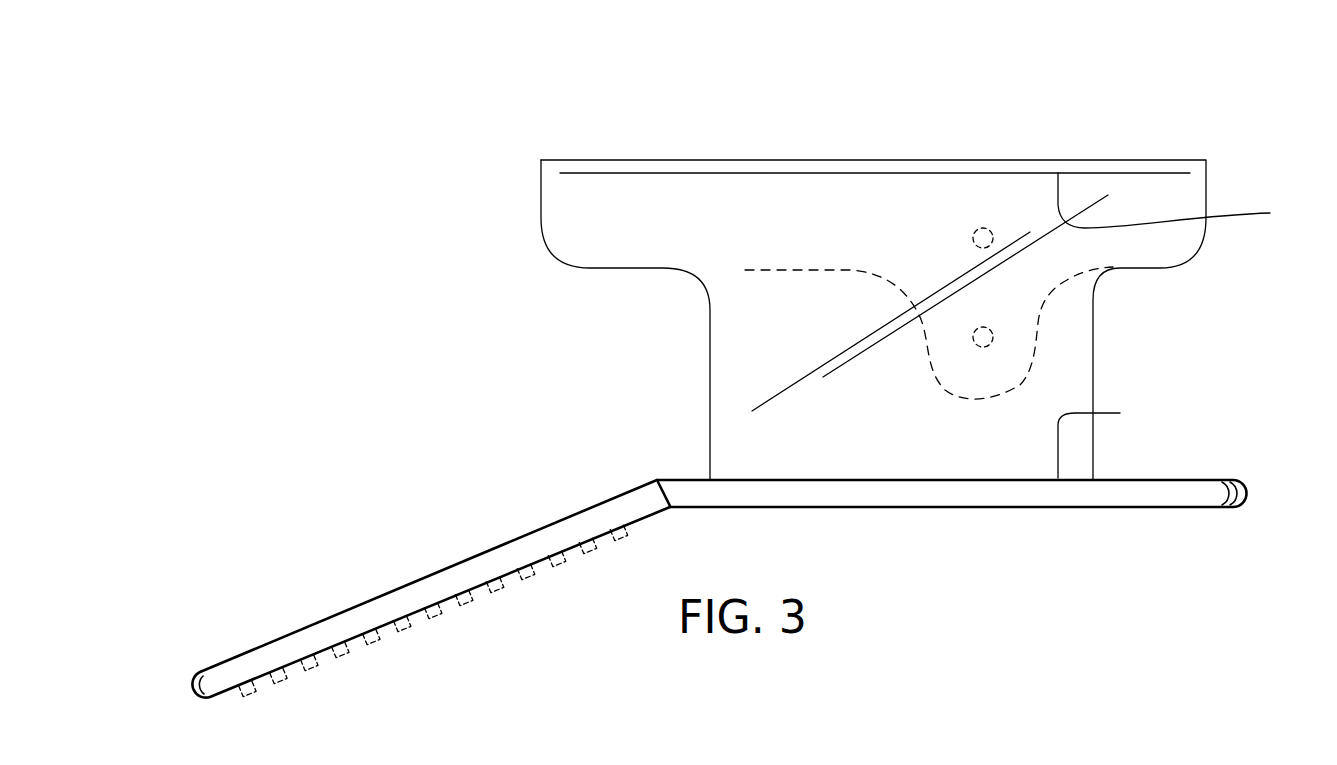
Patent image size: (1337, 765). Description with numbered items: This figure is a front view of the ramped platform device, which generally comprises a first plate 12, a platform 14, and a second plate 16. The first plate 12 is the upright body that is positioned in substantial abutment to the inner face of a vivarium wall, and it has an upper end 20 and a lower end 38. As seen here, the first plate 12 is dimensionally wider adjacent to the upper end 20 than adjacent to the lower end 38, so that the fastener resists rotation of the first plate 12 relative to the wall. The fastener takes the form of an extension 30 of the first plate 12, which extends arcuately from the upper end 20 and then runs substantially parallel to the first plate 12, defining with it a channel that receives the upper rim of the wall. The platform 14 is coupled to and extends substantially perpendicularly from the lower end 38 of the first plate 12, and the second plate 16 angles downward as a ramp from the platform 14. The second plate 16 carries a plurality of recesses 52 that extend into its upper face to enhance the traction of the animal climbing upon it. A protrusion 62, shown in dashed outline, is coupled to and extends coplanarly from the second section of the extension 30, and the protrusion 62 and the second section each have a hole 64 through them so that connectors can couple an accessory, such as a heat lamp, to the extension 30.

The first plate 12 is at (1070, 352).
The platform 14 is at (1185, 492).
The second plate 16 is at (543, 557).
The upper end 20 is at (1188, 204).
The extension 30 is at (677, 222).
The lower end 38 is at (1113, 436).
The recesses 52 is at (482, 557).
The protrusion 62 is at (993, 320).
The hole 64 is at (983, 327).